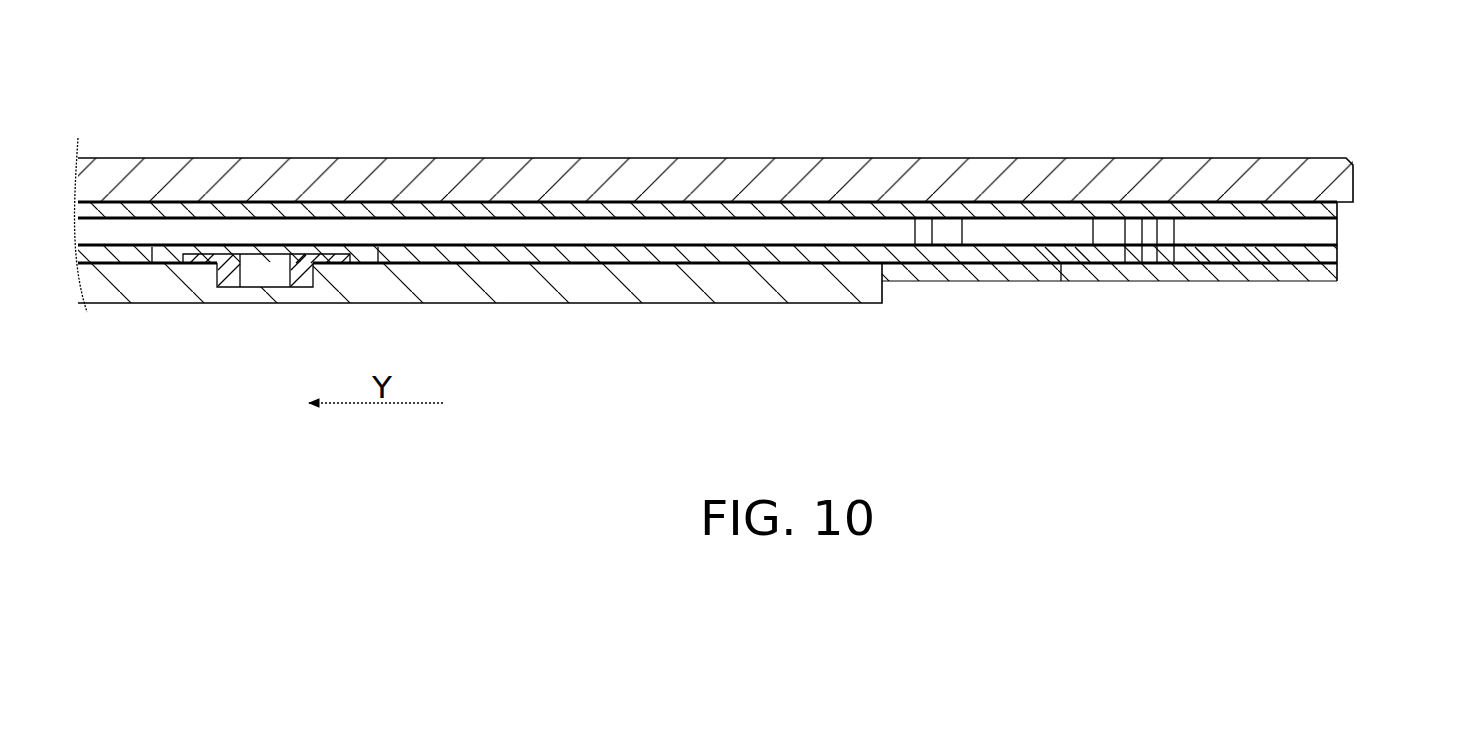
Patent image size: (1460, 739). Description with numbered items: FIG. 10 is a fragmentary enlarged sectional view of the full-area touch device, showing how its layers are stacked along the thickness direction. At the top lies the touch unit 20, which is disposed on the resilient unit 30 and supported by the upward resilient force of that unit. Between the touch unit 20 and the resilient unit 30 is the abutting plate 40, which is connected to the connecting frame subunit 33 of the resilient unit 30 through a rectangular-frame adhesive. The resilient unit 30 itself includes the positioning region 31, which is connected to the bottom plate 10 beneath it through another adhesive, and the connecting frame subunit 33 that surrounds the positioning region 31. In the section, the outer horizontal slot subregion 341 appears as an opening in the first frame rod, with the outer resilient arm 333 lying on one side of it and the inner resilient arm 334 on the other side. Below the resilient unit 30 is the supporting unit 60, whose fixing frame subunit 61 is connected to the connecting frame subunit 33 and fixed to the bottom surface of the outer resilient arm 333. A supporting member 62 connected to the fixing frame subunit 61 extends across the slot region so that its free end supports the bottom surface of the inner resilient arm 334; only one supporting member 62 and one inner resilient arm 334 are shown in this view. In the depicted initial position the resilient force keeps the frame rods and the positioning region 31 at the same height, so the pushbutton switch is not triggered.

The bottom plate 10 is at (600, 305).
The touch unit 20 is at (1085, 157).
The resilient unit 30 is at (758, 231).
The positioning region 31 is at (697, 257).
The connecting frame subunit 33 is at (1210, 248).
The outer resilient arm 333 is at (1257, 255).
The inner resilient arm 334 is at (1073, 253).
The outer horizontal slot subregion 341 is at (1168, 267).
The abutting plate 40 is at (1338, 225).
The supporting unit 60 is at (1109, 338).
The fixing frame subunit 61 is at (1243, 272).
The supporting member 62 is at (1068, 272).